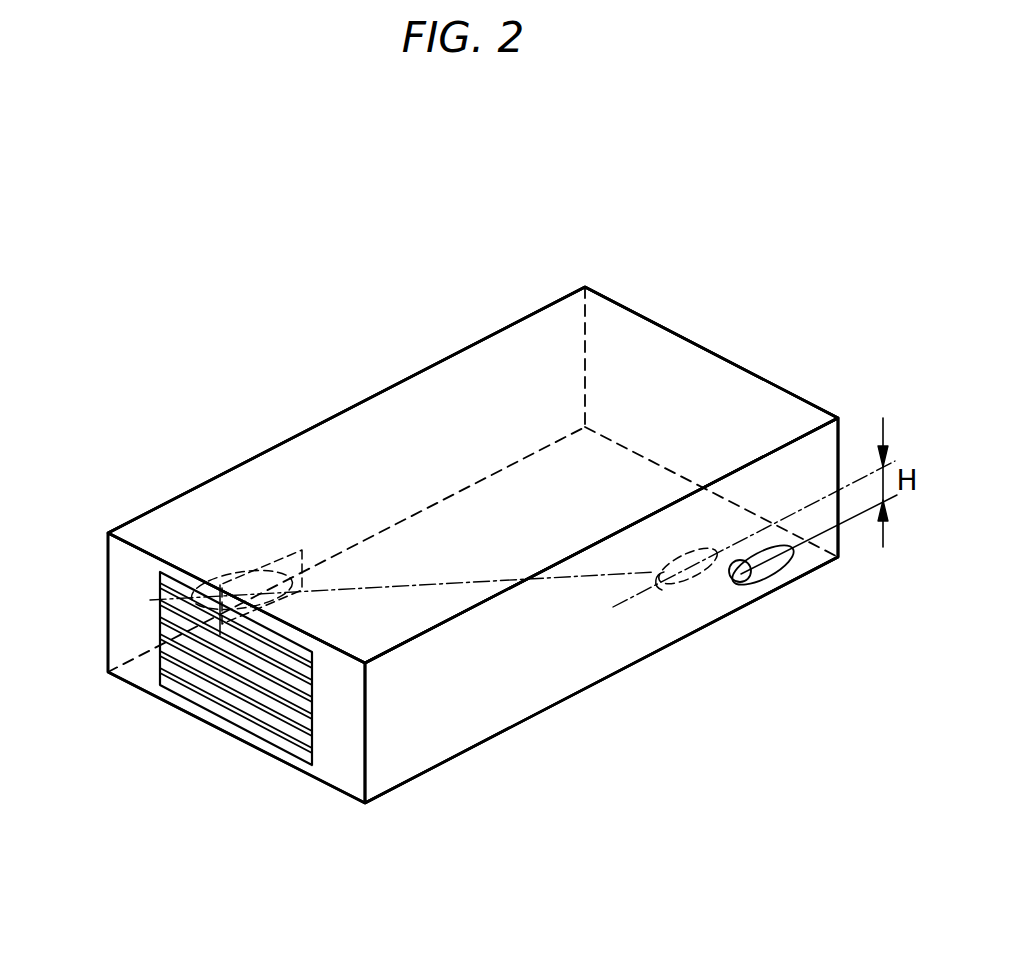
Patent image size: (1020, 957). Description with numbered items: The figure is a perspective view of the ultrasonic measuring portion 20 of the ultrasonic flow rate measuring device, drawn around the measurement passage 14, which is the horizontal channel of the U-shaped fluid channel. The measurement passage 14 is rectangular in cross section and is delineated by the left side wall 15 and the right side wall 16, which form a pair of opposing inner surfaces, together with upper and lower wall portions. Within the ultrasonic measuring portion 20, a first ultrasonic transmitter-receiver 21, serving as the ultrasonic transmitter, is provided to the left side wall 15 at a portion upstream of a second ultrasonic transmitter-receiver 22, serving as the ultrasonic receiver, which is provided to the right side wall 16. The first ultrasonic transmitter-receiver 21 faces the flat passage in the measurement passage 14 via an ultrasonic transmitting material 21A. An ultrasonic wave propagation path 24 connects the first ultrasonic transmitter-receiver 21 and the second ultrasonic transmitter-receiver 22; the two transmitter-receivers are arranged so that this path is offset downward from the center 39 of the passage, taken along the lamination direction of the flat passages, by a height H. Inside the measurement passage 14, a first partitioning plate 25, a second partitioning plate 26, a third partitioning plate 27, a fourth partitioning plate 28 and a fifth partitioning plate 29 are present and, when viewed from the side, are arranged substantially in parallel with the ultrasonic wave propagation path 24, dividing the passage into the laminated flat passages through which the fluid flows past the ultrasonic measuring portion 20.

The measurement passage 14 is at (486, 332).
The left side wall 15 is at (352, 430).
The right side wall 16 is at (523, 683).
The ultrasonic measuring portion 20 is at (319, 292).
The first ultrasonic transmitter-receiver 21 is at (260, 563).
The ultrasonic transmitting material 21A is at (283, 550).
The second ultrasonic transmitter-receiver 22 is at (758, 575).
The ultrasonic wave propagation path 24 is at (465, 580).
The first partitioning plate 25 is at (160, 600).
The second partitioning plate 26 is at (190, 637).
The third partitioning plate 27 is at (232, 668).
The fourth partitioning plate 28 is at (275, 698).
The fifth partitioning plate 29 is at (297, 730).
The center 39 is at (868, 468).